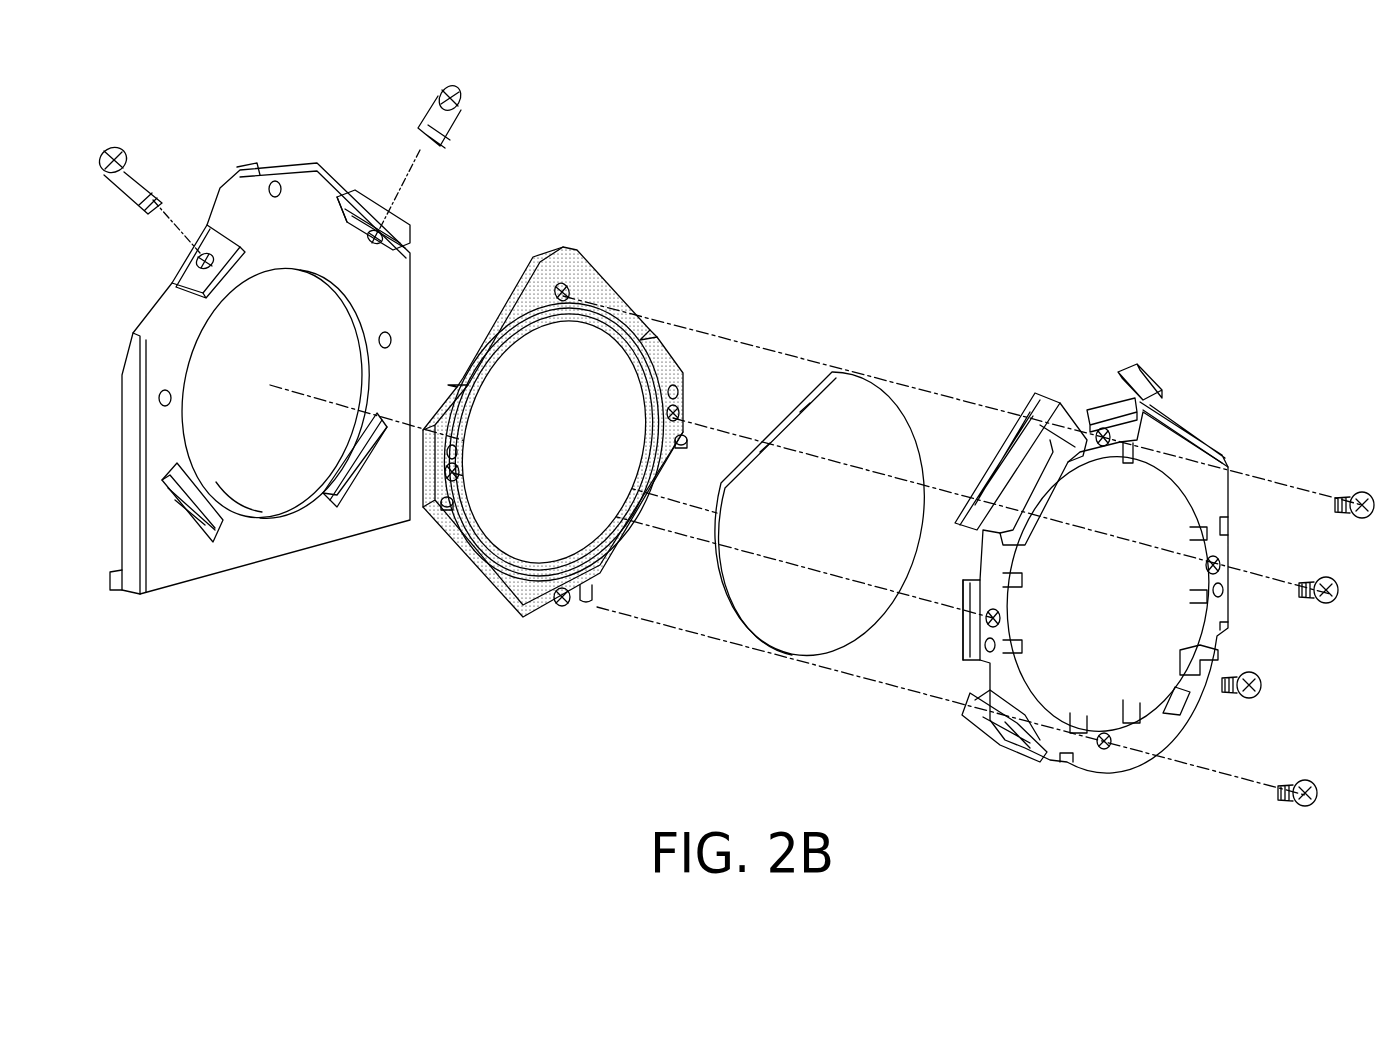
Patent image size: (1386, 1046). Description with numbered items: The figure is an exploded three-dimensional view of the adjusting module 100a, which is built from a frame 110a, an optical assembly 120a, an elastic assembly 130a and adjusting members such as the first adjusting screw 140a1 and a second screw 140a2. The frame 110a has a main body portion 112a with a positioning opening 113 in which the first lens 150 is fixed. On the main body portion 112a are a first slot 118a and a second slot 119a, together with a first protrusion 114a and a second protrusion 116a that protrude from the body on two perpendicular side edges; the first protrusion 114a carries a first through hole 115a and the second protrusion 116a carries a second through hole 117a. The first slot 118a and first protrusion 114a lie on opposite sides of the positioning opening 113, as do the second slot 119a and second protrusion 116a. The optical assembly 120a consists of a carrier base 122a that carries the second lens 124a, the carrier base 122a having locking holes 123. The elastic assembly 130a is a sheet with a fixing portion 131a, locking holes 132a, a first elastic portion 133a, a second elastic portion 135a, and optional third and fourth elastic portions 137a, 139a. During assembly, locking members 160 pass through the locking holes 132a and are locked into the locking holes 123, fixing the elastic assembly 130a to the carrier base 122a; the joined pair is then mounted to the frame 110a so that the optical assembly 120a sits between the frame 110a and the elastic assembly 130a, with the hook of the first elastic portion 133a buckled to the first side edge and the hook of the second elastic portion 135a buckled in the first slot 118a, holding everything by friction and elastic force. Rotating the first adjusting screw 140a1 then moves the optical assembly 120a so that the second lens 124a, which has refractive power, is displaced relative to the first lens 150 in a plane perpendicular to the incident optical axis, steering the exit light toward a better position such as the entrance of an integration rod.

The adjusting module 100a is at (272, 750).
The frame 110a is at (468, 225).
The main body portion 112a is at (384, 300).
The positioning opening 113 is at (232, 488).
The first protrusion 114a is at (360, 200).
The first through hole 115a is at (385, 250).
The second protrusion 116a is at (177, 278).
The second through hole 117a is at (208, 255).
The first slot 118a is at (177, 520).
The second slot 119a is at (345, 508).
The optical assembly 120a is at (825, 246).
The carrier base 122a is at (675, 360).
The locking holes 123 is at (558, 292).
The second lens 124a is at (838, 395).
The elastic assembly 130a is at (1215, 422).
The fixing portion 131a is at (962, 630).
The locking holes 132a is at (1093, 438).
The first elastic portion 133a is at (1172, 410).
The second elastic portion 135a is at (1013, 752).
The third elastic portion 137a is at (998, 432).
The fourth elastic portion 139a is at (1194, 680).
The first adjusting screw 140a1 is at (438, 112).
The screw 140a2 is at (125, 178).
The first lens 150 is at (218, 348).
The locking members 160 is at (1355, 492).